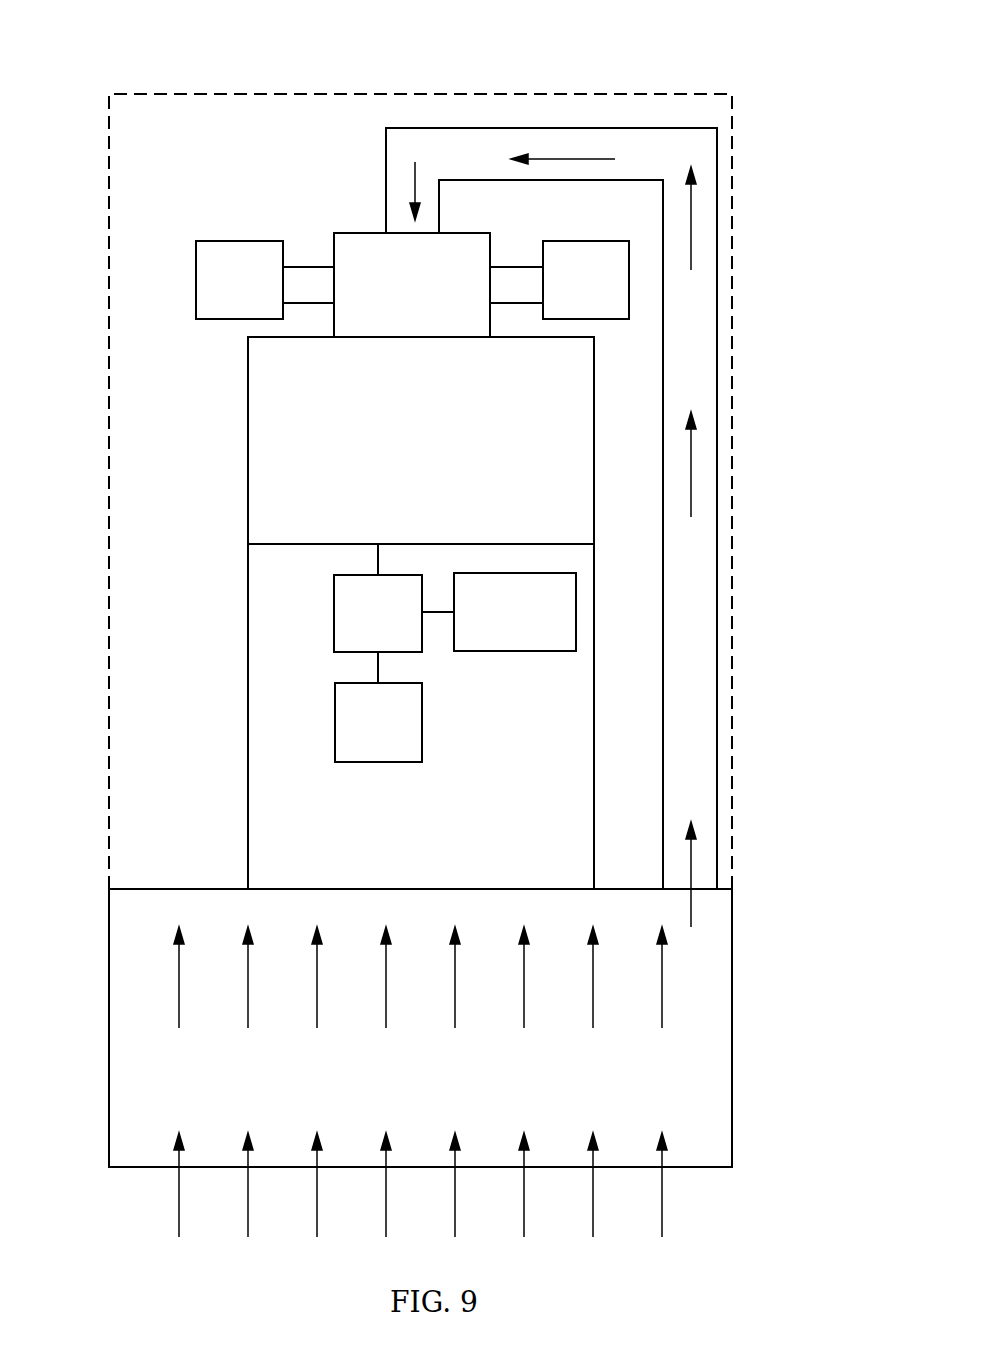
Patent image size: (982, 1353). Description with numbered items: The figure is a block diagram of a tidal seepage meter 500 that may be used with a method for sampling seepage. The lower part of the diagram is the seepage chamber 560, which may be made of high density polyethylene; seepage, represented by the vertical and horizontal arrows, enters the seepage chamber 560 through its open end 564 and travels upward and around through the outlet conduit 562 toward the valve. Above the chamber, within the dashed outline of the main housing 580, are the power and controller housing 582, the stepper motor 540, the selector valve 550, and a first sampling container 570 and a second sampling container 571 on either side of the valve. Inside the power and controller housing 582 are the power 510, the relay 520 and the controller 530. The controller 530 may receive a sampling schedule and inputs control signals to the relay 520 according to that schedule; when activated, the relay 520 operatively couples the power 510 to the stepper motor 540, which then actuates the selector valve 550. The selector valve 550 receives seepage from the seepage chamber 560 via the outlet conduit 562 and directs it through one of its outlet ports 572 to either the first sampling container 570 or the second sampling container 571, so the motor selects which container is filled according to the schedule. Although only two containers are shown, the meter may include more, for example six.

The tidal seepage meter 500 is at (806, 58).
The power 510 is at (363, 748).
The relay 520 is at (367, 641).
The controller 530 is at (538, 640).
The stepper motor 540 is at (275, 488).
The selector valve 550 is at (378, 247).
The seepage chamber 560 is at (128, 1073).
The outlet conduit 562 is at (680, 632).
The open end 564 is at (160, 1170).
The first sampling container 570 is at (217, 292).
The second sampling container 571 is at (608, 300).
The outlet ports 572 is at (318, 273).
The main housing 580 is at (128, 753).
The power and controller housing 582 is at (280, 828).